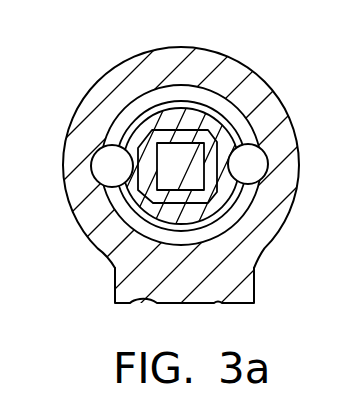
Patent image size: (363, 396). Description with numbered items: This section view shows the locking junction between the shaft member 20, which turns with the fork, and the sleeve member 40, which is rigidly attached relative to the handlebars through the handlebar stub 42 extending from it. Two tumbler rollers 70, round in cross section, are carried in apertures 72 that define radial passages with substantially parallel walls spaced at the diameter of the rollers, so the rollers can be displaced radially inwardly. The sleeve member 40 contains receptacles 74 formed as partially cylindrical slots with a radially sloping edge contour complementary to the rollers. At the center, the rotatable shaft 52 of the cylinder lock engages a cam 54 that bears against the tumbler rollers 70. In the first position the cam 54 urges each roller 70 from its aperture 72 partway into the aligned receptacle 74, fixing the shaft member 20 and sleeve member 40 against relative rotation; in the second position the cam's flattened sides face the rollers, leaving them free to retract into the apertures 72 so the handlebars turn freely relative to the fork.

The shaft member 20 is at (101, 249).
The sleeve member 40 is at (265, 96).
The handlebar stub 42 is at (219, 304).
The rotatable shaft 52 is at (175, 152).
The cam 54 is at (173, 198).
The tumbler rollers 70 is at (92, 163).
The aperture 72 is at (238, 212).
The receptacle 74 is at (262, 183).